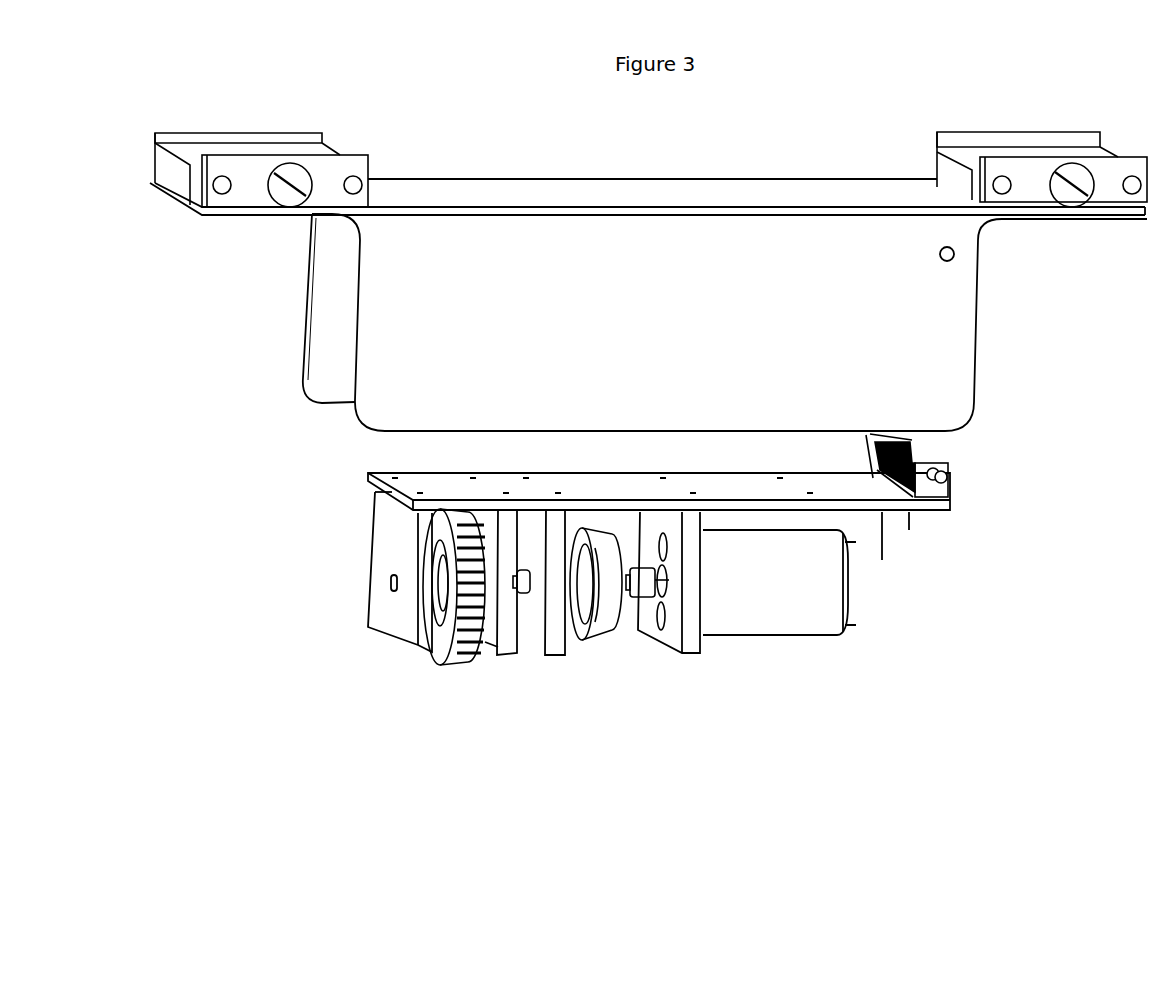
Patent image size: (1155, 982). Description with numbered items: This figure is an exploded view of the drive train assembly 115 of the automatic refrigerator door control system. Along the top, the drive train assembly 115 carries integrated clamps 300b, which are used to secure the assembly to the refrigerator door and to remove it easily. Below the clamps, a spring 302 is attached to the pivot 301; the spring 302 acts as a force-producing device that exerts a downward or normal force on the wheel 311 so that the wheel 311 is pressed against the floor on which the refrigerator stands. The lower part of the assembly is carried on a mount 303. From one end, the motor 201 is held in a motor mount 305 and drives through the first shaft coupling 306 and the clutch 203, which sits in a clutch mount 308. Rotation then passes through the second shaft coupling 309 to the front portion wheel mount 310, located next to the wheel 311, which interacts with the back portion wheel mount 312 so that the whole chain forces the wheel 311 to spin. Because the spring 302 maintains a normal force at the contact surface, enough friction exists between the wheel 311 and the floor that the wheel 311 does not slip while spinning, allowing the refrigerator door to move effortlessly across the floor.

The drive train assembly 115 is at (647, 175).
The integrated clamp 300b is at (183, 160).
The pivot 301 is at (955, 256).
The spring 302 is at (953, 477).
The mount 303 is at (882, 560).
The back portion wheel mount 312 is at (382, 642).
The wheel 311 is at (451, 667).
The front portion wheel mount 310 is at (498, 655).
The second shaft coupling 309 is at (518, 655).
The clutch mount 308 is at (555, 655).
The clutch 203 is at (607, 637).
The first shaft coupling 306 is at (640, 633).
The motor mount 305 is at (690, 657).
The motor 201 is at (800, 637).